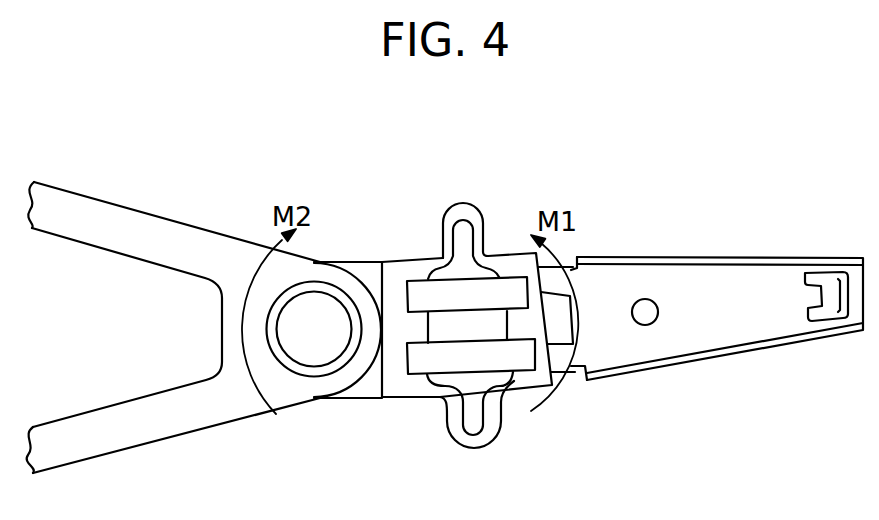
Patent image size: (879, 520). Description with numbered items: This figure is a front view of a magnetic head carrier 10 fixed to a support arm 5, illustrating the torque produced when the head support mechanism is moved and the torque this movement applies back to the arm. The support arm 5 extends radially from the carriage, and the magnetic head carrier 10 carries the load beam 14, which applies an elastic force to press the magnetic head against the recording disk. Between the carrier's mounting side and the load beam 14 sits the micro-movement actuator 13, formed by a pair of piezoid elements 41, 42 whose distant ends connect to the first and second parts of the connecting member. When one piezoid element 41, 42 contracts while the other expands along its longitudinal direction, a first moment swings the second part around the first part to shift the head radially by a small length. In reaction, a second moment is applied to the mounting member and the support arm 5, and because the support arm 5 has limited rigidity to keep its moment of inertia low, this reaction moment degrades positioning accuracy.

The support arm 5 is at (123, 205).
The magnetic head carrier 10 is at (367, 228).
The micro-movement actuator 13 is at (418, 280).
The load beam 14 is at (717, 278).
The piezoid element 41 is at (406, 314).
The piezoid element 42 is at (498, 371).